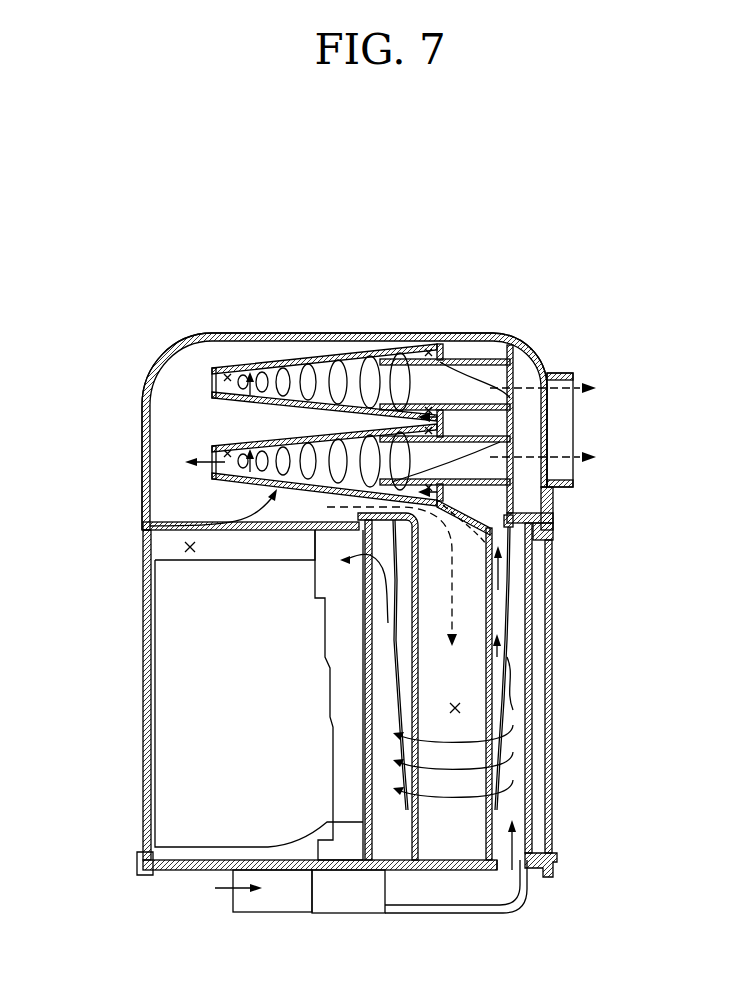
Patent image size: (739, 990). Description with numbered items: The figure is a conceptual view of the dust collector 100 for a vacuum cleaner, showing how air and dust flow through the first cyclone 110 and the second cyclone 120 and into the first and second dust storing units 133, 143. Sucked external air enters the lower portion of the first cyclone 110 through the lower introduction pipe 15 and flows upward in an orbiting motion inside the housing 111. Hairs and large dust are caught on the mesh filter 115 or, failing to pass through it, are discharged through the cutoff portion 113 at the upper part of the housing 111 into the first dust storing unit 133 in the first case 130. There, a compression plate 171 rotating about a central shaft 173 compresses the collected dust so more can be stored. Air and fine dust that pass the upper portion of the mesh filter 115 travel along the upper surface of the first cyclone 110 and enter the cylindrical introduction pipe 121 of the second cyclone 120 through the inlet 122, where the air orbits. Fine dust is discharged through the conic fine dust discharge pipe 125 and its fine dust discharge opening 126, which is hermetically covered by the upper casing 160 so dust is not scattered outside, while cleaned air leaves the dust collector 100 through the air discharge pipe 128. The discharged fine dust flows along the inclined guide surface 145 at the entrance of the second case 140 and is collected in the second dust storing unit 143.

The dust collector 100 is at (160, 328).
The upper casing 160 is at (143, 478).
The second cyclone 120 is at (452, 224).
The fine dust discharge pipe 125 is at (303, 356).
The introduction pipe 121 is at (385, 358).
The air discharge pipe 128 is at (460, 352).
The inlet 122 is at (430, 410).
The fine dust discharge opening 126 is at (212, 372).
The first dust storing unit 133 is at (190, 547).
The first case 130 is at (143, 692).
The compression plate 171 is at (190, 745).
The central shaft 173 is at (345, 780).
The guide surface 145 is at (517, 536).
The first cyclone 110 is at (638, 580).
The cutoff portion 113 is at (372, 588).
The mesh filter 115 is at (473, 630).
The housing 111 is at (530, 675).
The second dust storing unit 143 is at (458, 708).
The second case 140 is at (490, 747).
The lower introduction pipe 15 is at (492, 910).